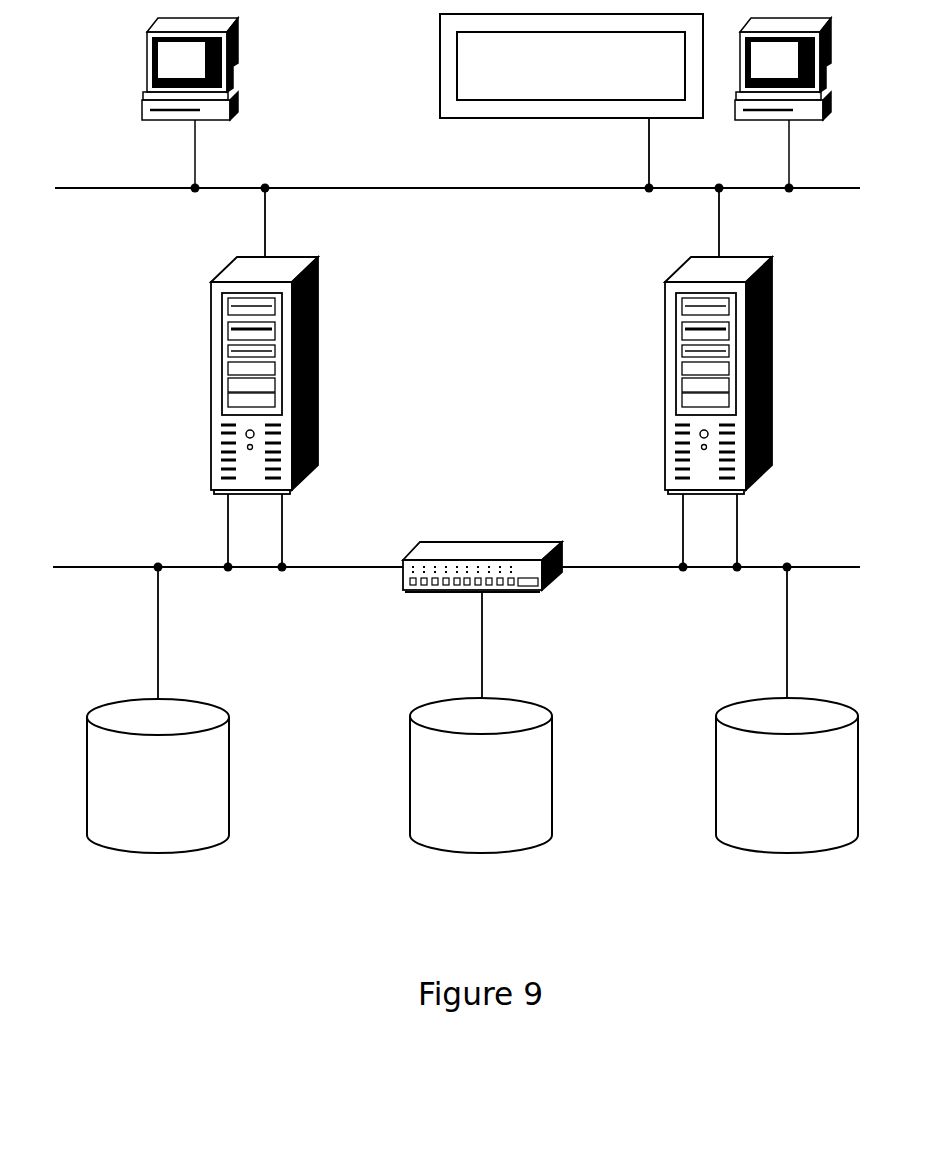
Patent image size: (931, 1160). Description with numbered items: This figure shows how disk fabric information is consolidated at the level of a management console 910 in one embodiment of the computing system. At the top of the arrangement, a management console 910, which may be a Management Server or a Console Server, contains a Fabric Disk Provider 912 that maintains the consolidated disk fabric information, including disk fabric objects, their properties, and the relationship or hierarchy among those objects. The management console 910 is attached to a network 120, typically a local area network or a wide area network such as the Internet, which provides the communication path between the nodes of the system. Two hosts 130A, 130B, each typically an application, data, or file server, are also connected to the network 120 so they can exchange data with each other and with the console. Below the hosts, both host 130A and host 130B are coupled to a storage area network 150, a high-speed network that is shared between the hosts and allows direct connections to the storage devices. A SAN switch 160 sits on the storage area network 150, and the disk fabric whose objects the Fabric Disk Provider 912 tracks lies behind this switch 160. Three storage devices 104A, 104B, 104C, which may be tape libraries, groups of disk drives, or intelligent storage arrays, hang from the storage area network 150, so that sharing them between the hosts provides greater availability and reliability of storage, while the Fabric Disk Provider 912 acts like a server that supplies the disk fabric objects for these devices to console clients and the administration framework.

The management console 910 is at (440, 67).
The Fabric Disk Provider 912 is at (590, 92).
The network 120 is at (125, 188).
The host 130A is at (248, 256).
The host 130B is at (702, 256).
The storage area network 150 is at (125, 567).
The SAN switch 160 is at (480, 542).
The storage device 104A is at (185, 808).
The storage device 104B is at (508, 808).
The storage device 104C is at (806, 808).